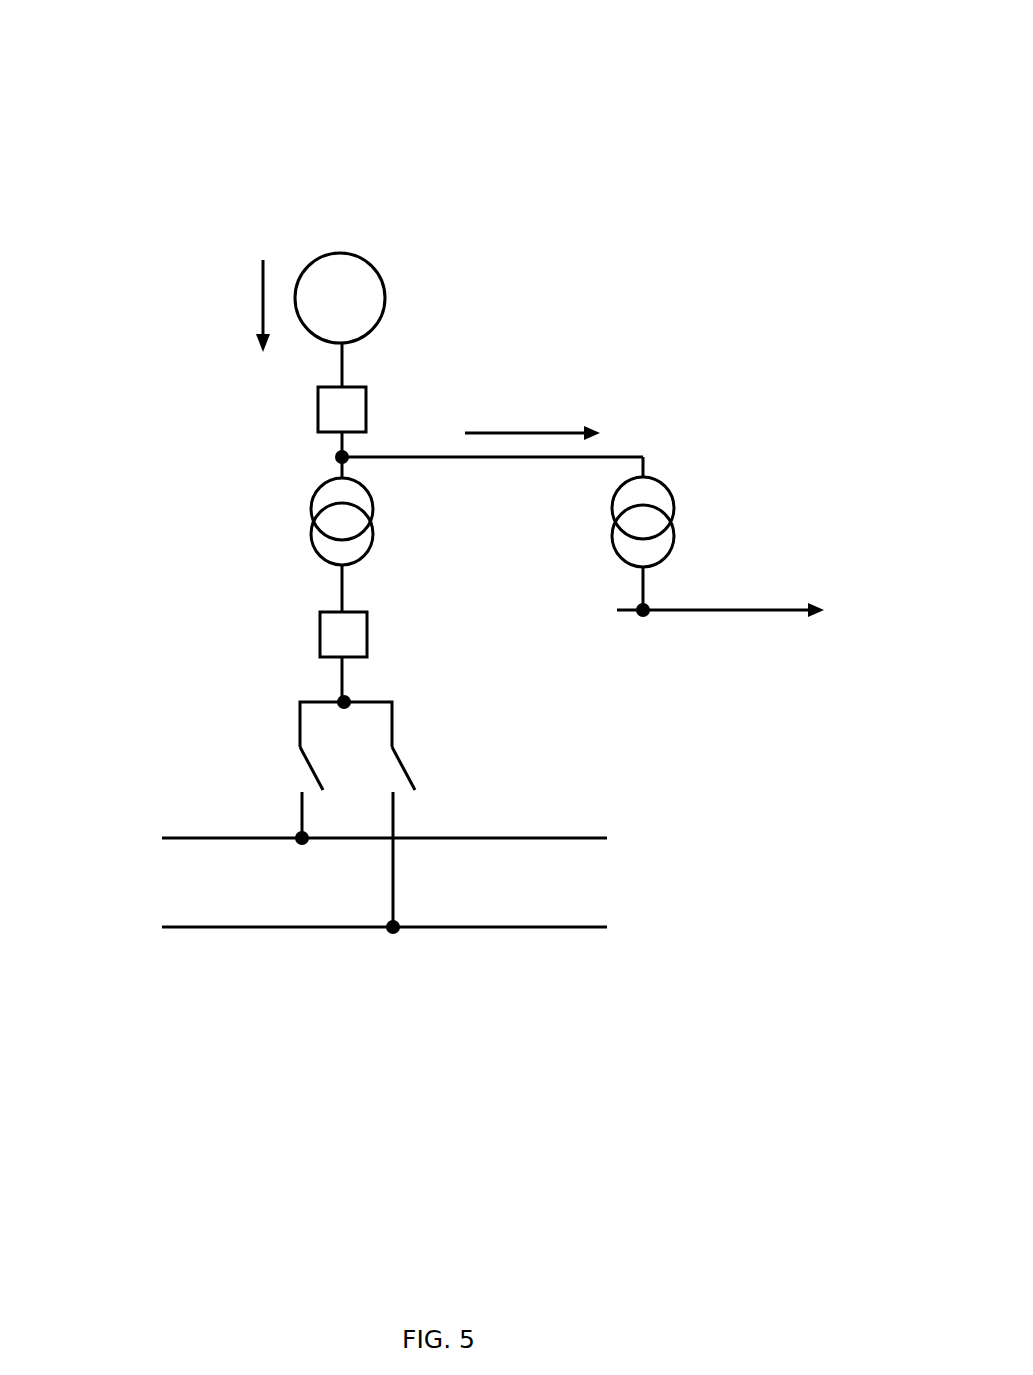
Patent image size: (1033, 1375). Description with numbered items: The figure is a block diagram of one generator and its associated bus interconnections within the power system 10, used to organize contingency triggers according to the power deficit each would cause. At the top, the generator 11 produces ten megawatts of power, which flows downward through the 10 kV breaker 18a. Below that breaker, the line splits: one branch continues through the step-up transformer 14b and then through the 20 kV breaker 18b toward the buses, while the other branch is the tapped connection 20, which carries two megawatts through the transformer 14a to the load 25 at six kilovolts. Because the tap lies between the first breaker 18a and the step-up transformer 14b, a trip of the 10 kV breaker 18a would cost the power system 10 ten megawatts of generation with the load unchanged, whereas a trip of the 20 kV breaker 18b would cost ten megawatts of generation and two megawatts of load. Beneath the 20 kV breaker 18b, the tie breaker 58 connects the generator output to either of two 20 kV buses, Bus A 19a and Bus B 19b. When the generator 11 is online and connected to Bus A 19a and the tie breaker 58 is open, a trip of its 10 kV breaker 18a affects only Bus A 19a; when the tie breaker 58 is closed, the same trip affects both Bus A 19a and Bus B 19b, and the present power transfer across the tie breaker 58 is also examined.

The power system 10 is at (703, 21).
The generator 11 is at (376, 263).
The 10 kV breaker 18a is at (367, 395).
The 20 kV breaker 18b is at (368, 620).
The transformer 14a is at (675, 498).
The step-up transformer 14b is at (374, 499).
The tapped load connection 20 is at (572, 458).
The load 25 is at (741, 610).
The tie breaker 58 is at (395, 716).
The Bus A 19a is at (607, 838).
The Bus B 19b is at (607, 927).